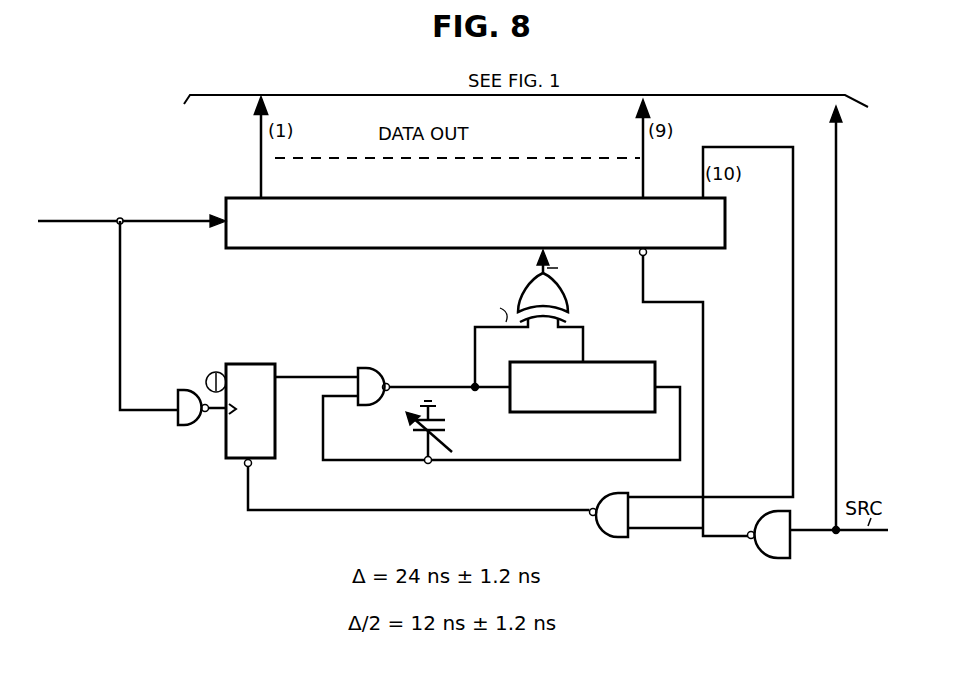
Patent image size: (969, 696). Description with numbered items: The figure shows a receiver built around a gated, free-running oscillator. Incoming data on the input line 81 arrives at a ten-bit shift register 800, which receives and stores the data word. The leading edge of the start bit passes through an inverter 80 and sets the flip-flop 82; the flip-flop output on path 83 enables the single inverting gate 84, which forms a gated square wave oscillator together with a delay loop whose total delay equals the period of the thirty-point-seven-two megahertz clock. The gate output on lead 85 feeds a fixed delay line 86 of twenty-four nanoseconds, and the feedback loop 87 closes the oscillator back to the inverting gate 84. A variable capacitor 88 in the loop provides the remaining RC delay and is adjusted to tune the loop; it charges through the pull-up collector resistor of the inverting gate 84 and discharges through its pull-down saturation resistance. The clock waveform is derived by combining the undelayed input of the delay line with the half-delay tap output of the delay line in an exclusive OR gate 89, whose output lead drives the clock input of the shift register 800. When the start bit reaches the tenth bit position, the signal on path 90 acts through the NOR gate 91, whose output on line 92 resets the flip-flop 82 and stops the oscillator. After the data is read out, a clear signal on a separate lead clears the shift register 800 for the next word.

The inverter 80 is at (183, 423).
The data input line 81 is at (164, 218).
The flip-flop 82 is at (250, 366).
The path 83 is at (330, 376).
The inverting gate 84 is at (370, 372).
The gate output line 85 is at (458, 385).
The fixed delay line 86 is at (598, 413).
The feedback line 87 is at (590, 462).
The capacitor 88 is at (410, 441).
The exclusive OR gate 89 is at (535, 297).
The path 90 is at (790, 392).
The NOR gate 91 is at (608, 497).
The flip-flop output line 92 is at (522, 510).
The shift register 800 is at (727, 236).